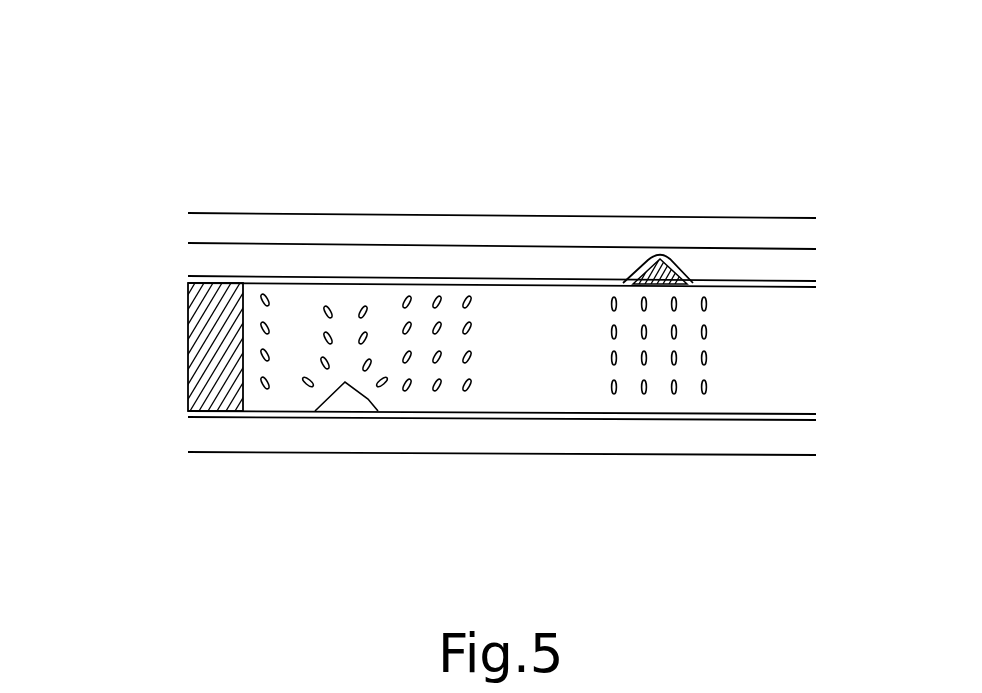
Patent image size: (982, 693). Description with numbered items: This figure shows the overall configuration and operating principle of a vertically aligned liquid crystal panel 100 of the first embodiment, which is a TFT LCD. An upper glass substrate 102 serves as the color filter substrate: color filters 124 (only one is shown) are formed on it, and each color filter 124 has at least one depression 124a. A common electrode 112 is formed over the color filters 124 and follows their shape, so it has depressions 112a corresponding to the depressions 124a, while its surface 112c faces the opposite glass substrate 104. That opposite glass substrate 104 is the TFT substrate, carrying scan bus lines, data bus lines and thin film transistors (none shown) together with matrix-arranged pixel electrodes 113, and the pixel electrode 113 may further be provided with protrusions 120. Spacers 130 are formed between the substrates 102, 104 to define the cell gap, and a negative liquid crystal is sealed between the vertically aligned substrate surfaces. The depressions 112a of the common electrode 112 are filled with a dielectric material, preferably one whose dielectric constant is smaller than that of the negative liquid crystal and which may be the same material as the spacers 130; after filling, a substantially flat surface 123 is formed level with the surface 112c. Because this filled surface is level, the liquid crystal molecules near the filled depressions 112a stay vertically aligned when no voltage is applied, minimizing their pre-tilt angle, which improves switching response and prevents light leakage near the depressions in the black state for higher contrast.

The liquid crystal panel 100 is at (270, 136).
The glass substrate 102 is at (457, 215).
The opposite glass substrate 104 is at (557, 453).
The common electrode 112 is at (775, 287).
The depression 112a is at (630, 278).
The surface 112c is at (545, 285).
The pixel electrode 113 is at (770, 415).
The protrusion 120 is at (343, 402).
The substantially flat surface 123 is at (656, 287).
The color filter 124 is at (403, 257).
The depression 124a is at (675, 262).
The spacer 130 is at (203, 330).